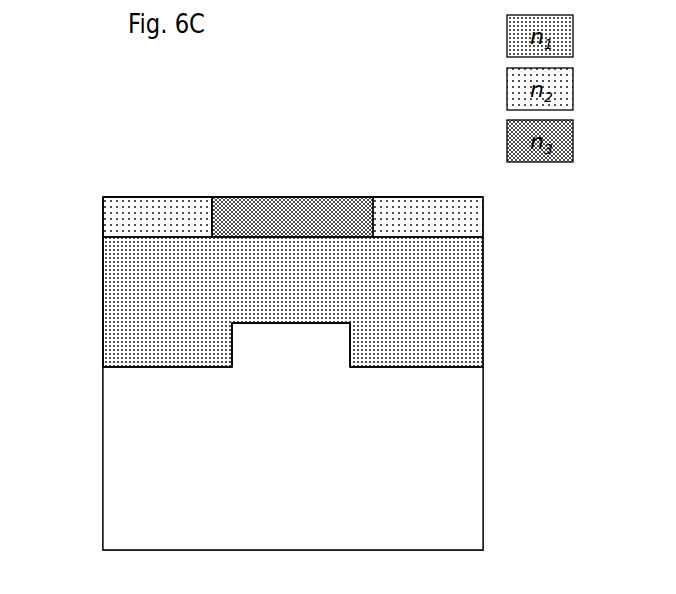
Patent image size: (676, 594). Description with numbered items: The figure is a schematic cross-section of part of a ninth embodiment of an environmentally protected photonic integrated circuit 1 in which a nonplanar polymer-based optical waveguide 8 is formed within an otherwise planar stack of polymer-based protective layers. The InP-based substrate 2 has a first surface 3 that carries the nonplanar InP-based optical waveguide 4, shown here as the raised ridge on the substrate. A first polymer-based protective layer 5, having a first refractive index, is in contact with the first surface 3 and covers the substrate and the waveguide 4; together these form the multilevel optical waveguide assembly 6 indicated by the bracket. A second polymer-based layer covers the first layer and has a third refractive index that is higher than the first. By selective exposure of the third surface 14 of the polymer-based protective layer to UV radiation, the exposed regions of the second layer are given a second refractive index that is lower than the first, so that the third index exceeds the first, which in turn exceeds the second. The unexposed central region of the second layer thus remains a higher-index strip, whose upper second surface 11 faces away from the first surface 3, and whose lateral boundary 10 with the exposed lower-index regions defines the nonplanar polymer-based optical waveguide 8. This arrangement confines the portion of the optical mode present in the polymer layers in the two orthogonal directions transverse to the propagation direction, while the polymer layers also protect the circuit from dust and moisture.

The photonic integrated circuit 1 is at (348, 92).
The InP-based substrate 2 is at (457, 428).
The first surface 3 is at (443, 365).
The nonplanar InP-based optical waveguide 4 is at (357, 345).
The polymer-based protective layer 5 is at (460, 300).
The multilevel optical waveguide assembly 6 is at (95, 197).
The nonplanar polymer-based optical waveguide 8 is at (372, 173).
The elongated structure 10 is at (208, 222).
The second surface 11 is at (297, 195).
The third surface 14 is at (147, 192).